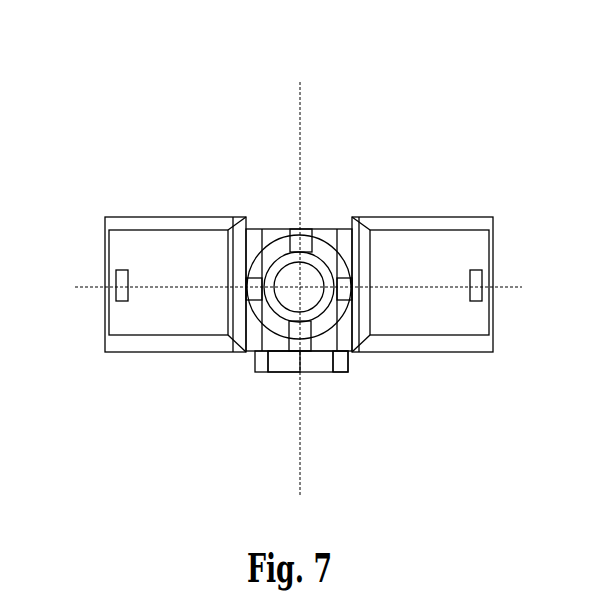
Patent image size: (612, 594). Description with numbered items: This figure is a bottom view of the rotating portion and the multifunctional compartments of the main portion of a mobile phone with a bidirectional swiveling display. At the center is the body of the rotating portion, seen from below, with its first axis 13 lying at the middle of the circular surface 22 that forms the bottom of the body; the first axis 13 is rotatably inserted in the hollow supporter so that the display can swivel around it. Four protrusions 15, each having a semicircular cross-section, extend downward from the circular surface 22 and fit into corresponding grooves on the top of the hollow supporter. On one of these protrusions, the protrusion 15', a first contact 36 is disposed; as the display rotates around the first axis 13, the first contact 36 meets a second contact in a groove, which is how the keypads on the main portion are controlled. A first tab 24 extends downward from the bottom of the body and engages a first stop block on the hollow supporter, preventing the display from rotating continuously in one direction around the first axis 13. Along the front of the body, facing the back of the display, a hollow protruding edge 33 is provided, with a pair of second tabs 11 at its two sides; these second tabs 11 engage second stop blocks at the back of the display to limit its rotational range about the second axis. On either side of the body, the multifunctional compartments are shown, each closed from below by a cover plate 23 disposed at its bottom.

The second tab 11 is at (314, 413).
The first axis 13 is at (390, 427).
The protrusion 15 is at (454, 224).
The protrusion 15' is at (387, 193).
The circular surface 22 is at (202, 212).
The cover plate 23 is at (136, 327).
The first tab 24 is at (421, 382).
The hollow protruding edge 33 is at (205, 440).
The first contact 36 is at (297, 242).